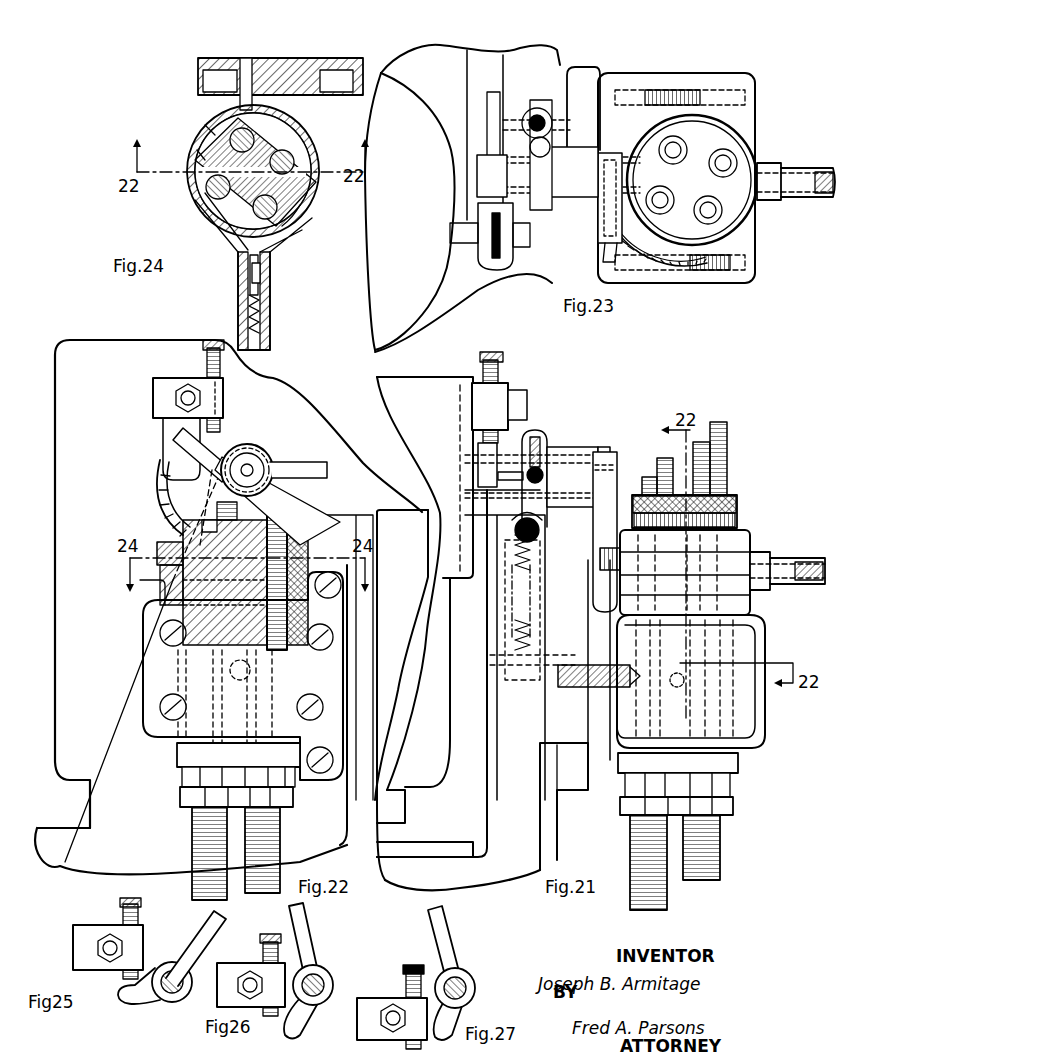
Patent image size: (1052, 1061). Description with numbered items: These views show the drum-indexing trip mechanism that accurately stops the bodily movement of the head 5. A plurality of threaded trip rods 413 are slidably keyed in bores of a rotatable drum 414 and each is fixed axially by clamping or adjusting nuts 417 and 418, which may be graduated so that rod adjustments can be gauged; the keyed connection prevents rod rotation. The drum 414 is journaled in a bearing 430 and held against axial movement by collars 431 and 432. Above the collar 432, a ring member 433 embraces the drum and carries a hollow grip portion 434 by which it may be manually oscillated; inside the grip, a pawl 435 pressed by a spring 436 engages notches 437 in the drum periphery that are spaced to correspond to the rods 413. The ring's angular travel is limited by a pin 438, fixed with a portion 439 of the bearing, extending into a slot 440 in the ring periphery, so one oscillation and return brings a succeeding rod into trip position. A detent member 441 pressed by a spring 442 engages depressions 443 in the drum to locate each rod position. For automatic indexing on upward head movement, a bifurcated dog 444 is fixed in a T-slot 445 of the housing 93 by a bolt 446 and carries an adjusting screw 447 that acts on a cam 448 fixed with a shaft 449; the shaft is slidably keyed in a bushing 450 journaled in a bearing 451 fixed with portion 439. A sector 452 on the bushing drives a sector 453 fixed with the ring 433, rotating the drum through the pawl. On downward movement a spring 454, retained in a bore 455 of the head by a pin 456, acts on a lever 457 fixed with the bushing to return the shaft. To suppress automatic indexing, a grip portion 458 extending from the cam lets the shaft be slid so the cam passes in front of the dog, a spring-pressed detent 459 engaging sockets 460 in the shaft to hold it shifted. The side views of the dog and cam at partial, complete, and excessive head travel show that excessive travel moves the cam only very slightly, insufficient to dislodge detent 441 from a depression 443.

In FIG. 22, the head 5 is at (60, 868).
In FIG. 21, the head 5 is at (535, 834).
In FIG. 22, the housing 93 is at (85, 380).
In FIG. 21, the housing 93 is at (440, 750).
In FIG. 24, the adjustable trip rods 413 is at (232, 132).
In FIG. 23, the adjustable trip rods 413 is at (725, 160).
In FIG. 22, the adjustable trip rods 413 is at (192, 830).
In FIG. 21, the adjustable trip rods 413 is at (720, 860).
In FIG. 24, the rotatable drum 414 is at (226, 132).
In FIG. 22, the rotatable drum 414 is at (160, 600).
In FIG. 21, the rotatable drum 414 is at (730, 705).
In FIG. 21, the clamping nut 417 is at (732, 785).
In FIG. 23, the clamping nut 418 is at (722, 210).
In FIG. 21, the clamping nut 418 is at (738, 520).
In FIG. 22, the bearing 430 is at (148, 650).
In FIG. 21, the bearing 430 is at (755, 725).
In FIG. 22, the collar 431 is at (180, 770).
In FIG. 21, the collar 431 is at (740, 760).
In FIG. 22, the collar 432 is at (157, 560).
In FIG. 21, the collar 432 is at (750, 600).
In FIG. 24, the ring member 433 is at (303, 212).
In FIG. 22, the ring member 433 is at (160, 540).
In FIG. 24, the grip portion 434 is at (248, 276).
In FIG. 23, the grip portion 434 is at (832, 148).
In FIG. 21, the grip portion 434 is at (805, 555).
In FIG. 24, the detent pawl 435 is at (252, 280).
In FIG. 24, the spring 436 is at (248, 308).
In FIG. 24, the notches 437 is at (212, 186).
In FIG. 24, the pin 438 is at (256, 99).
In FIG. 24, the bearing portion 439 is at (268, 58).
In FIG. 23, the bearing portion 439 is at (594, 73).
In FIG. 21, the bearing portion 439 is at (598, 735).
In FIG. 24, the slot 440 is at (224, 154).
In FIG. 21, the detent member 441 is at (628, 665).
In FIG. 21, the spring 442 is at (610, 690).
In FIG. 21, the depressions 443 is at (677, 688).
In FIG. 23, the dog 444 is at (503, 278).
In FIG. 22, the dog 444 is at (153, 400).
In FIG. 21, the dog 444 is at (505, 380).
In FIG. 25, the dog 444 is at (80, 930).
In FIG. 22, the T-slot 445 is at (165, 445).
In FIG. 22, the bolt 446 is at (176, 400).
In FIG. 22, the adjusting screw 447 is at (222, 365).
In FIG. 21, the adjusting screw 447 is at (462, 440).
In FIG. 23, the cam 448 is at (487, 207).
In FIG. 22, the cam 448 is at (210, 440).
In FIG. 21, the cam 448 is at (500, 450).
In FIG. 25, the cam 448 is at (140, 1005).
In FIG. 26, the cam 448 is at (298, 1020).
In FIG. 27, the cam 448 is at (440, 1038).
In FIG. 22, the shaft 449 is at (258, 446).
In FIG. 21, the shaft 449 is at (542, 470).
In FIG. 23, the bushing 450 is at (588, 125).
In FIG. 21, the bushing 450 is at (595, 440).
In FIG. 21, the bearing 451 is at (605, 445).
In FIG. 23, the sector 452 is at (604, 250).
In FIG. 21, the sector 452 is at (610, 452).
In FIG. 23, the sector 453 is at (616, 258).
In FIG. 22, the sector 453 is at (155, 575).
In FIG. 21, the sector 453 is at (617, 518).
In FIG. 21, the spring 454 is at (520, 580).
In FIG. 21, the bore 455 is at (510, 628).
In FIG. 21, the pin 456 is at (498, 680).
In FIG. 22, the lever 457 is at (280, 495).
In FIG. 21, the lever 457 is at (540, 520).
In FIG. 23, the grip portion 458 is at (487, 92).
In FIG. 22, the grip portion 458 is at (300, 462).
In FIG. 25, the grip portion 458 is at (205, 924).
In FIG. 21, the spring-pressed detent 459 is at (528, 485).
In FIG. 21, the sockets 460 is at (535, 440).